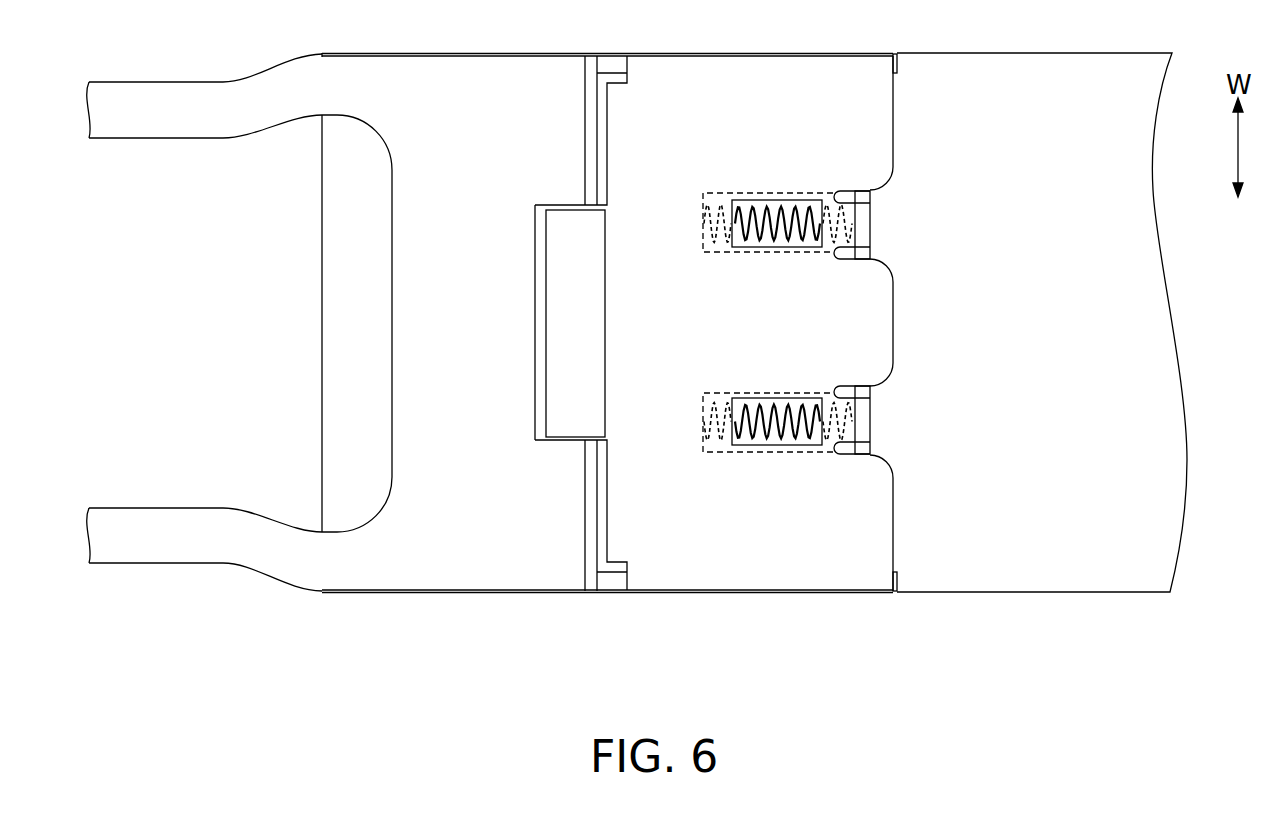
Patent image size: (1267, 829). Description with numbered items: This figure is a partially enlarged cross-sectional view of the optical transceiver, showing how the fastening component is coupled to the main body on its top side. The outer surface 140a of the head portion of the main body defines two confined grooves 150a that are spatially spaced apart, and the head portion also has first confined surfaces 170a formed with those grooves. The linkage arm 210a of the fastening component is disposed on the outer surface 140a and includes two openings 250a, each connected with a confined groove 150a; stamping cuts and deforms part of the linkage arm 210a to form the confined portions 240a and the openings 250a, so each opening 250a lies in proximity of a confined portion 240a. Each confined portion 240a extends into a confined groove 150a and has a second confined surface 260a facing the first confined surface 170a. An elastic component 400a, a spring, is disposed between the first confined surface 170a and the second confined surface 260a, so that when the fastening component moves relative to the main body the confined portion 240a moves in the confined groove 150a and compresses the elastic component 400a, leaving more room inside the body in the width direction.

The outer surface 140a is at (957, 557).
The linkage arm 210a is at (669, 555).
The confined groove 150a is at (722, 452).
The first confined surface 170a is at (722, 392).
The elastic component 400a is at (772, 438).
The opening 250a is at (797, 453).
The second confined surface 260a is at (828, 452).
The confined portion 240a is at (862, 424).